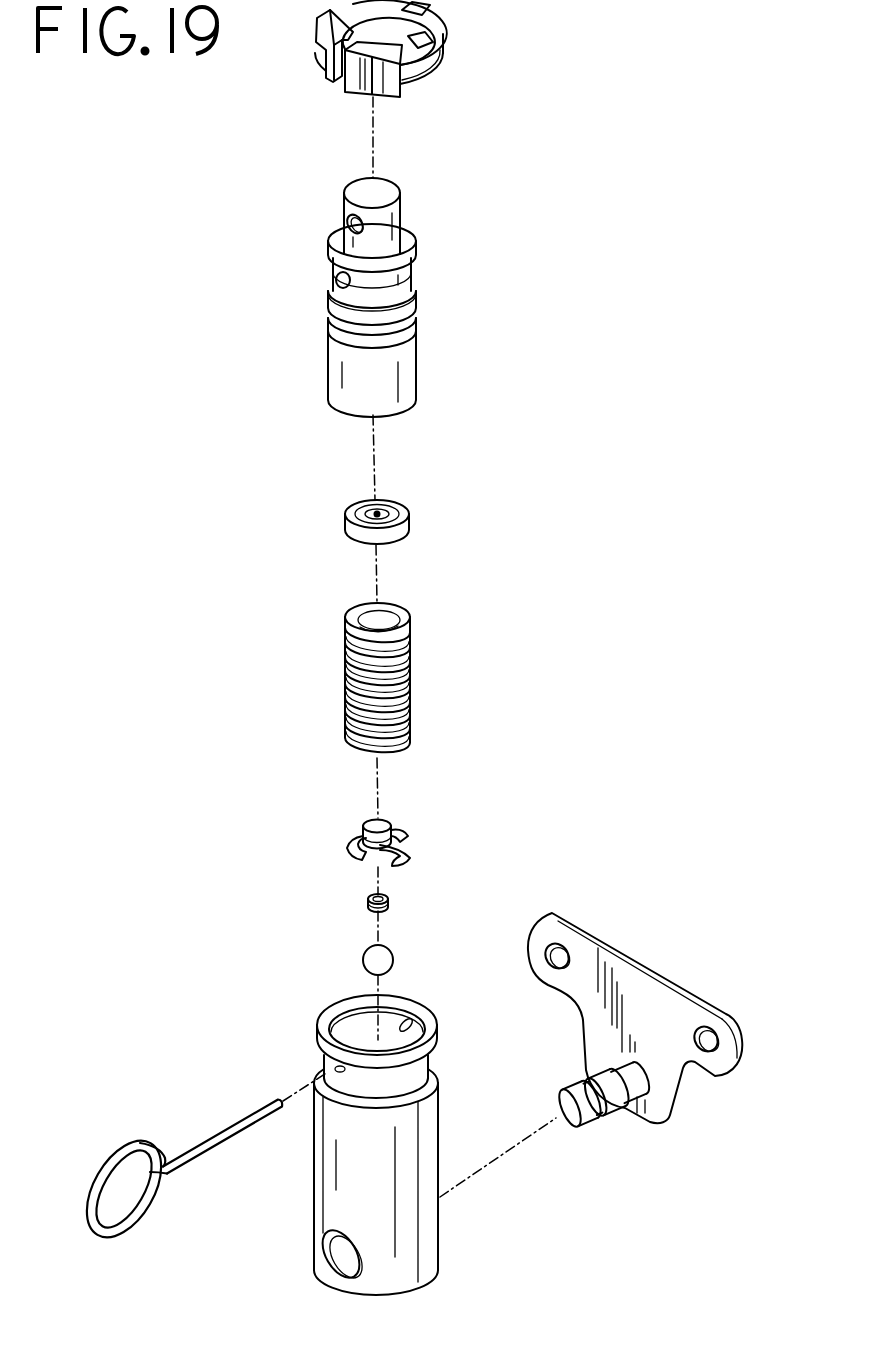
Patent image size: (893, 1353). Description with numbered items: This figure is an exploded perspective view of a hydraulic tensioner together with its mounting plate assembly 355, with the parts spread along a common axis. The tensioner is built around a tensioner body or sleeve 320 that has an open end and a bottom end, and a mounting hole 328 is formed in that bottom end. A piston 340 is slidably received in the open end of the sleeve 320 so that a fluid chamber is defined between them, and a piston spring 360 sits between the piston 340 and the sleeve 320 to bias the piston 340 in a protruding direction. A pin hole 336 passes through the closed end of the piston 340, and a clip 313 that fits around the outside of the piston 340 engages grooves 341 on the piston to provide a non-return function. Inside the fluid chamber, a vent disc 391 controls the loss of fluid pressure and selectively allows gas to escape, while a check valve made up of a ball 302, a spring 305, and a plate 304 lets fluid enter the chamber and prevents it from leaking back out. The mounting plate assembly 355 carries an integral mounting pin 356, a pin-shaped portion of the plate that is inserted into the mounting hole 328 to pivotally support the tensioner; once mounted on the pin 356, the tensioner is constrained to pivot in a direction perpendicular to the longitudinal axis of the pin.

The clip 313 is at (441, 47).
The pin hole 336 is at (350, 219).
The grooves 341 is at (417, 289).
The piston 340 is at (418, 344).
The vent disc 391 is at (410, 523).
The piston spring 360 is at (408, 660).
The plate 304 is at (410, 835).
The spring 305 is at (388, 901).
The ball 302 is at (393, 960).
The tensioner body or sleeve 320 is at (439, 1172).
The mounting hole 328 is at (335, 1265).
The mounting plate assembly 355 is at (630, 955).
The integral mounting pin 356 is at (578, 1090).